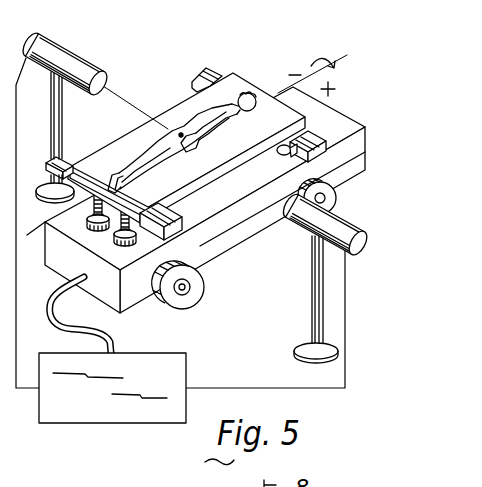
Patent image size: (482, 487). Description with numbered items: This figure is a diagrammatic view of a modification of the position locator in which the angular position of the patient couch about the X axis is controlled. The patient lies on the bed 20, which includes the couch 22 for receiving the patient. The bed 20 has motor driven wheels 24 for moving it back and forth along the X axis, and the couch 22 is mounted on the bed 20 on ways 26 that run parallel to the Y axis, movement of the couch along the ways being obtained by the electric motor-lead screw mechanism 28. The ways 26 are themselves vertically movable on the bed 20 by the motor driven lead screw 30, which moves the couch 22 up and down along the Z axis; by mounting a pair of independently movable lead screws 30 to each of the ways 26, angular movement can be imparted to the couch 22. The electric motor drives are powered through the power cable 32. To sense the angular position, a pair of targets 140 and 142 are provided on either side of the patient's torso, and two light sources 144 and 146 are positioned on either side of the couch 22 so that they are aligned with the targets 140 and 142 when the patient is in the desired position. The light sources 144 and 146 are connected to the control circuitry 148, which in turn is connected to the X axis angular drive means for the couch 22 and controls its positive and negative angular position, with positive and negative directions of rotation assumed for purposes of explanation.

The bed 20 is at (257, 233).
The couch 22 is at (162, 116).
The motor driven wheels 24 is at (188, 299).
The ways 26 is at (49, 164).
The electric motor-lead screw mechanism 28 is at (286, 158).
The motor driven lead screw 30 is at (88, 236).
The power cable 32 is at (113, 343).
The target 140 is at (160, 166).
The target 142 is at (181, 133).
The light source 144 is at (352, 220).
The light source 146 is at (72, 44).
The control circuitry 148 is at (52, 424).